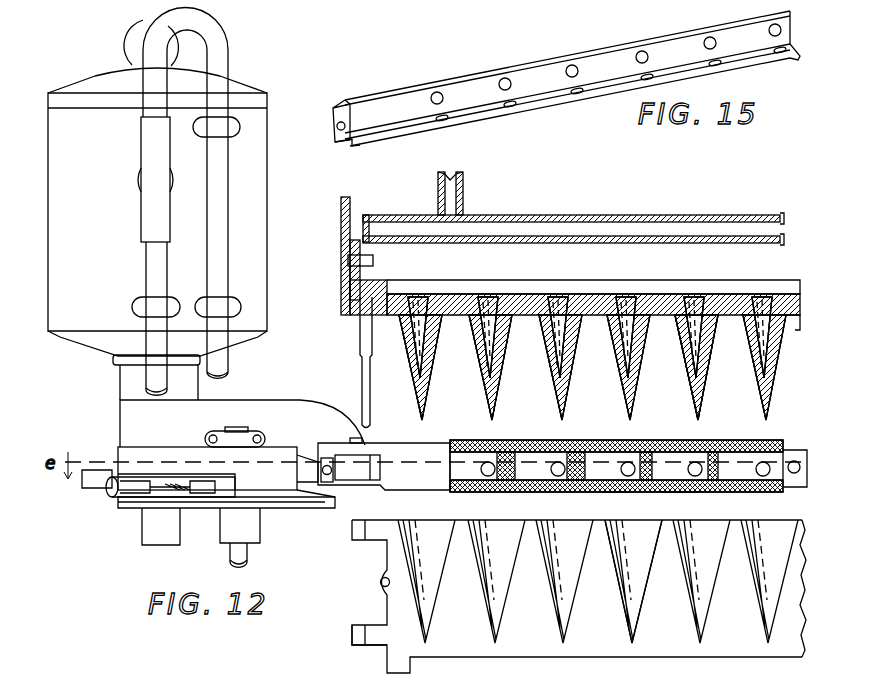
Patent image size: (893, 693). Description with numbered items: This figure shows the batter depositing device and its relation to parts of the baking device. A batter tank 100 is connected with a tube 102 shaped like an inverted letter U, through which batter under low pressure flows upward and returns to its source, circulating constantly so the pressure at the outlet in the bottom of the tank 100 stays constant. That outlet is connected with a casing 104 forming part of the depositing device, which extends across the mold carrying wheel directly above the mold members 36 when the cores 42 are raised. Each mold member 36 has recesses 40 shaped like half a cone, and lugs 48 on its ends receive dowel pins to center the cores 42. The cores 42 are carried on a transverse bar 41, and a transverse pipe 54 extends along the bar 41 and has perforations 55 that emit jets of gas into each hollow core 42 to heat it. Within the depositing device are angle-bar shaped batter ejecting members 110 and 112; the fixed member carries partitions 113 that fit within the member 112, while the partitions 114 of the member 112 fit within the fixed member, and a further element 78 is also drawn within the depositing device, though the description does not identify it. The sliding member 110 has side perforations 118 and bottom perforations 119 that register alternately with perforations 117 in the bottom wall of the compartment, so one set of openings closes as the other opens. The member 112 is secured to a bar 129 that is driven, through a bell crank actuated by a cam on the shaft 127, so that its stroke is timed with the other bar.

In FIG. 12, the batter tank 100 is at (157, 234).
In FIG. 12, the tube 102 is at (222, 58).
In FIG. 12, the shaft 127 is at (248, 553).
In FIG. 12, the bar 129 is at (93, 488).
In FIG. 12, the batter ejecting member 112 is at (528, 444).
In FIG. 12, the casing 104 is at (655, 433).
In FIG. 12, the partitions 114 is at (551, 469).
In FIG. 12, the roller 78 is at (616, 465).
In FIG. 12, the partitions 113 is at (729, 466).
In FIG. 12, the perforations 117 is at (690, 493).
In FIG. 12, the transverse pipe 54 is at (503, 222).
In FIG. 12, the perforations 55 is at (613, 244).
In FIG. 12, the transverse bar 41 is at (668, 290).
In FIG. 12, the cores 42 is at (700, 392).
In FIG. 12, the mold members 36 is at (579, 596).
In FIG. 12, the recesses 40 is at (690, 607).
In FIG. 12, the lugs 48 is at (352, 638).
In FIG. 15, the batter ejecting member 110 is at (592, 66).
In FIG. 15, the perforations 118 is at (570, 68).
In FIG. 15, the perforations 119 is at (574, 102).